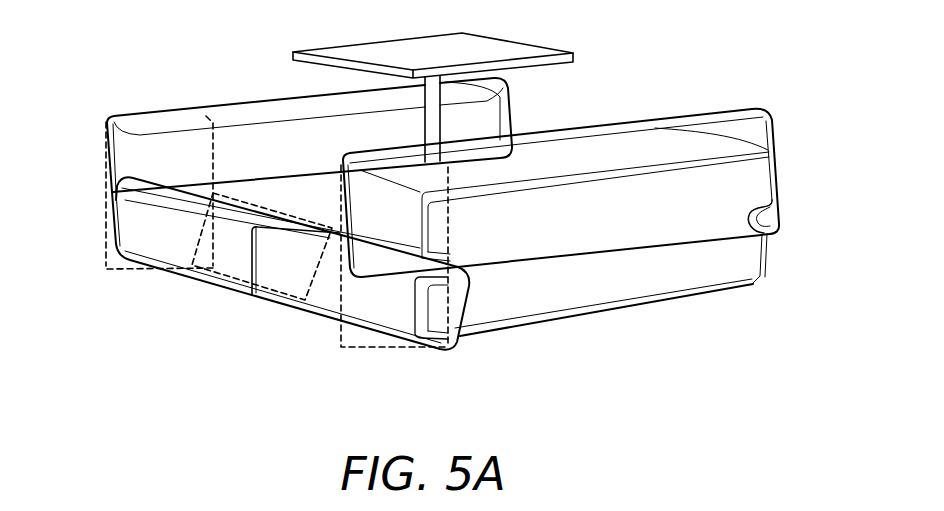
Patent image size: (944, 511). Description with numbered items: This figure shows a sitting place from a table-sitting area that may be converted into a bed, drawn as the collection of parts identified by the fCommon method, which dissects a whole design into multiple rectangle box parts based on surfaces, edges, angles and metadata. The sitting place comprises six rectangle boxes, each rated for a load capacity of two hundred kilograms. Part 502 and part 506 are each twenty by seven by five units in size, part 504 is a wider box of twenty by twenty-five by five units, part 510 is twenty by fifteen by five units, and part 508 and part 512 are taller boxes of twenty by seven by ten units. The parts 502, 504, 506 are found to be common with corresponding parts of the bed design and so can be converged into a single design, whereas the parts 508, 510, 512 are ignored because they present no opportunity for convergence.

The rectangle box part 502 is at (776, 136).
The rectangle box part 504 is at (137, 272).
The rectangle box part 506 is at (233, 102).
The rectangle box part 508 is at (344, 349).
The rectangle box part 510 is at (284, 306).
The rectangle box part 512 is at (105, 180).